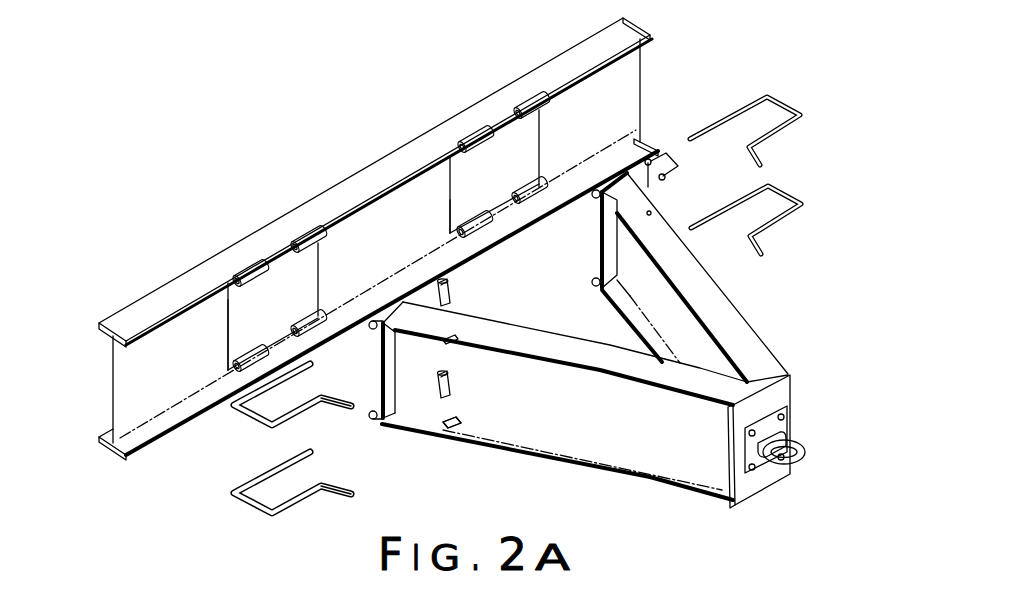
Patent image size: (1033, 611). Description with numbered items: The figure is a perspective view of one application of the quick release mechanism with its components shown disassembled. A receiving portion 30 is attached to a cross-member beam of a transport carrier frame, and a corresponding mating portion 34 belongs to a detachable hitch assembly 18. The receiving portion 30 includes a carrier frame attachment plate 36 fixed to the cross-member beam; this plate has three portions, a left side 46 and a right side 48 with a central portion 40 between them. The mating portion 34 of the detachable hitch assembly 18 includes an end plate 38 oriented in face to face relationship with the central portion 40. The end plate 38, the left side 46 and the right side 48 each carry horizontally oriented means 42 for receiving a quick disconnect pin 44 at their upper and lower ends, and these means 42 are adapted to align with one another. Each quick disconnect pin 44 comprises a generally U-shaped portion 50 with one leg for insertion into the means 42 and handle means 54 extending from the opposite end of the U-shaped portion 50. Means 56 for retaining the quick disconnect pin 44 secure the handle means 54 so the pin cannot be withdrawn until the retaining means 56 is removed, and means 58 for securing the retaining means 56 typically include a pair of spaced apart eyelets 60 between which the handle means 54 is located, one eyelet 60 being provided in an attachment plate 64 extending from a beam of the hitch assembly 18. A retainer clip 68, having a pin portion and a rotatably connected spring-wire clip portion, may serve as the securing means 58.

The detachable hitch assembly 18 is at (800, 348).
The receiving portion 30 is at (122, 382).
The mating portion 34 is at (603, 235).
The carrier frame attachment plate 36 is at (424, 203).
The end plate 38 is at (383, 372).
The central portion 40 is at (275, 293).
The means for receiving a quick disconnect pin 42 is at (302, 240).
The quick disconnect pin 44 is at (745, 80).
The left side portion 46 is at (224, 327).
The right side portion 48 is at (310, 280).
The U-shaped portion 50 is at (248, 420).
The handle means 54 is at (348, 394).
The means for retaining the quick disconnect pin 56 is at (602, 188).
The means for securing the means for retaining 58 is at (485, 422).
The eyelet 60 is at (446, 337).
The attachment plate 64 is at (469, 383).
The retainer clip 68 is at (465, 284).